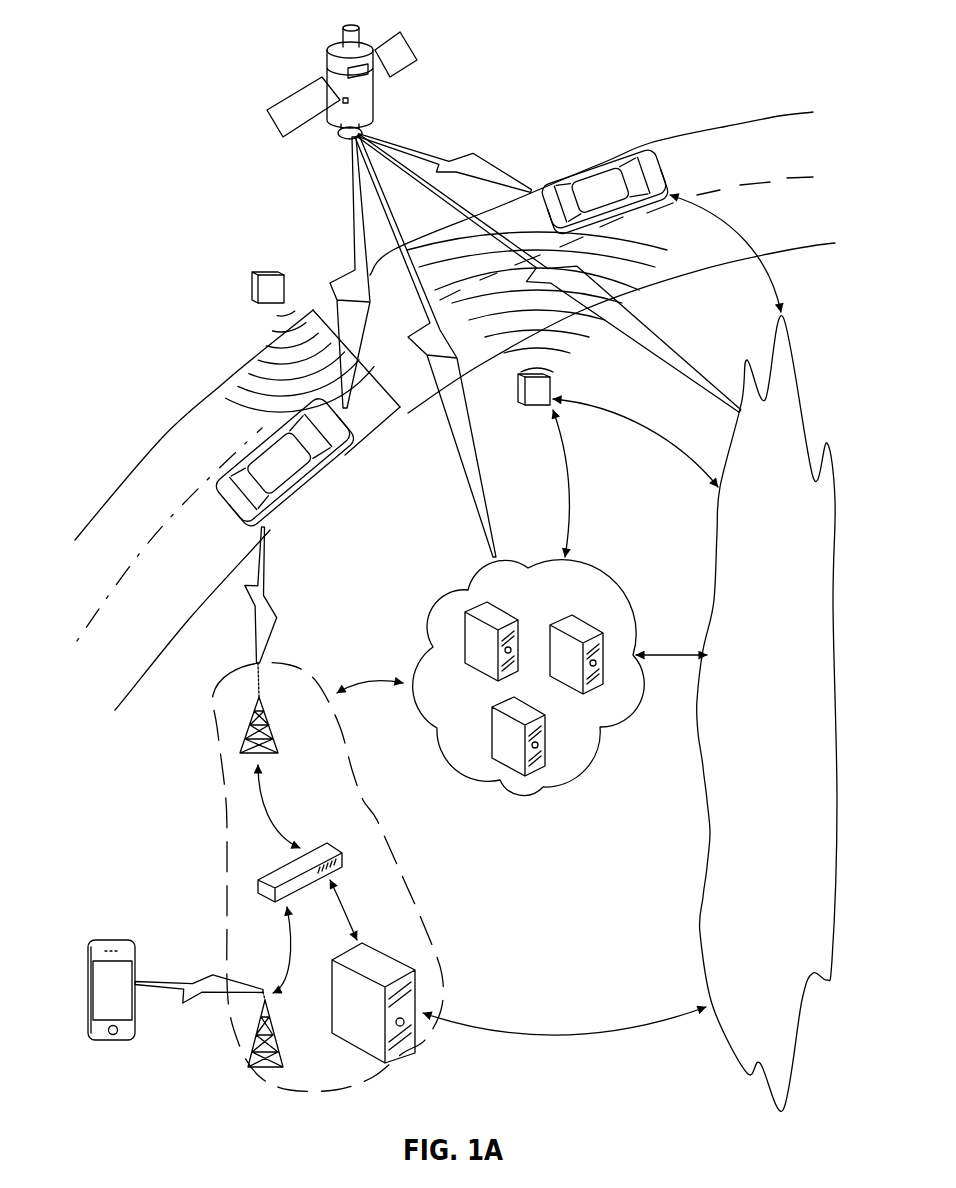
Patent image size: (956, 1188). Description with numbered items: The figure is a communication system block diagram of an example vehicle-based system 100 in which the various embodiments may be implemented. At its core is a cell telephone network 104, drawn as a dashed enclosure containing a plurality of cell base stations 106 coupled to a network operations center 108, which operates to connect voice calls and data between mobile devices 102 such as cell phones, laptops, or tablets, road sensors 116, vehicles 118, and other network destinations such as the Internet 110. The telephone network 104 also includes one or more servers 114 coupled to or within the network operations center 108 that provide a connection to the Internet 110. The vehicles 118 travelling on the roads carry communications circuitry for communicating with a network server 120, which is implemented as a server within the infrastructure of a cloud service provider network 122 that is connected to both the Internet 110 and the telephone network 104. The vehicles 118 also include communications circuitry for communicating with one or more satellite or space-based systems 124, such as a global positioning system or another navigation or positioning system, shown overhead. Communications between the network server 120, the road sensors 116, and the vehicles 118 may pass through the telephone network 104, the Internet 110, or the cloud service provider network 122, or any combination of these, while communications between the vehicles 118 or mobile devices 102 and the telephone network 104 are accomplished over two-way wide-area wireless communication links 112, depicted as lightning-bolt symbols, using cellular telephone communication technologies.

The vehicle-based system 100 is at (193, 95).
The mobile devices 102 is at (130, 940).
The cell telephone network 104 is at (230, 822).
The cell base stations 106 is at (268, 730).
The network operations center 108 is at (320, 845).
The Internet 110 is at (714, 552).
The two-way wide-area wireless communication links 112 is at (274, 598).
The servers 114 is at (393, 957).
The road sensors 116 is at (252, 278).
The vehicles 118 is at (642, 150).
The network server 120 is at (467, 663).
The cloud service provider network 122 is at (529, 698).
The satellite or space-based systems 124 is at (327, 48).